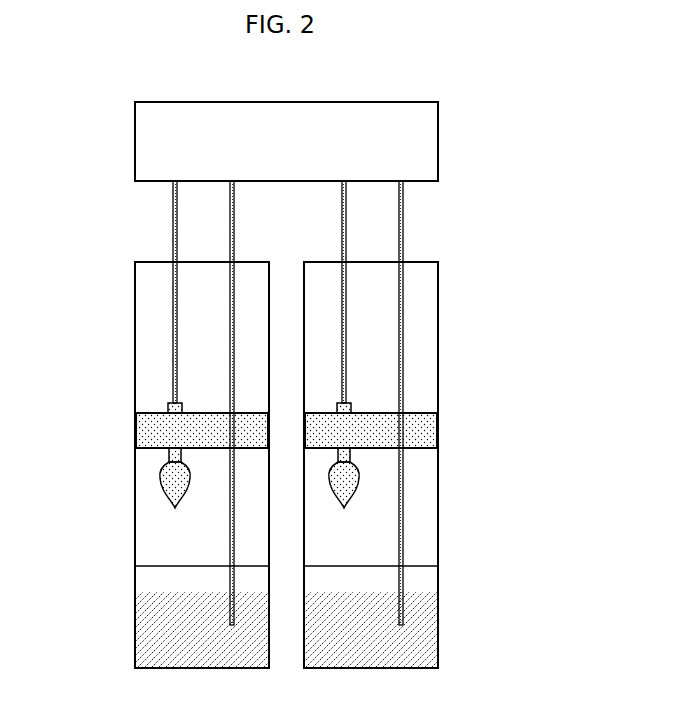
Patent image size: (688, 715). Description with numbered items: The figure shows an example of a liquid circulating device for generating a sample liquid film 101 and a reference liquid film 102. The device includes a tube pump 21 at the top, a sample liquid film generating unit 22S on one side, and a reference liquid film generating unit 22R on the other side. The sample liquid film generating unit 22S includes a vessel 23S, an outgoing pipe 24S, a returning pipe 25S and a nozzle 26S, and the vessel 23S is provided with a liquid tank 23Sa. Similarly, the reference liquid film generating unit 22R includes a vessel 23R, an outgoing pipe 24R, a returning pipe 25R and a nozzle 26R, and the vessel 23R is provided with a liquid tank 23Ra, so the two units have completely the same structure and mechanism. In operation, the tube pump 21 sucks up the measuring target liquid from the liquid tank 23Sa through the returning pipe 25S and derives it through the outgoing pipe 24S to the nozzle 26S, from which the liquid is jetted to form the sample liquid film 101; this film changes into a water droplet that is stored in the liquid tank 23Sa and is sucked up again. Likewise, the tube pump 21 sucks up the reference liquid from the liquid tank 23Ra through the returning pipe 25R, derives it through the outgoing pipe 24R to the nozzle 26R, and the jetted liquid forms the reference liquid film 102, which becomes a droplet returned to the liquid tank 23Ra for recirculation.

The tube pump 21 is at (438, 141).
The sample liquid film generating unit 22S is at (153, 424).
The reference liquid film generating unit 22R is at (420, 424).
The vessel 23S is at (135, 325).
The vessel 23R is at (438, 322).
The liquid tank 23Sa is at (155, 606).
The liquid tank 23Ra is at (425, 604).
The outgoing pipe 24S is at (173, 232).
The outgoing pipe 24R is at (342, 254).
The returning pipe 25S is at (234, 229).
The returning pipe 25R is at (403, 253).
The nozzle 26S is at (166, 462).
The nozzle 26R is at (352, 462).
The sample liquid film 101 is at (160, 487).
The reference liquid film 102 is at (356, 486).